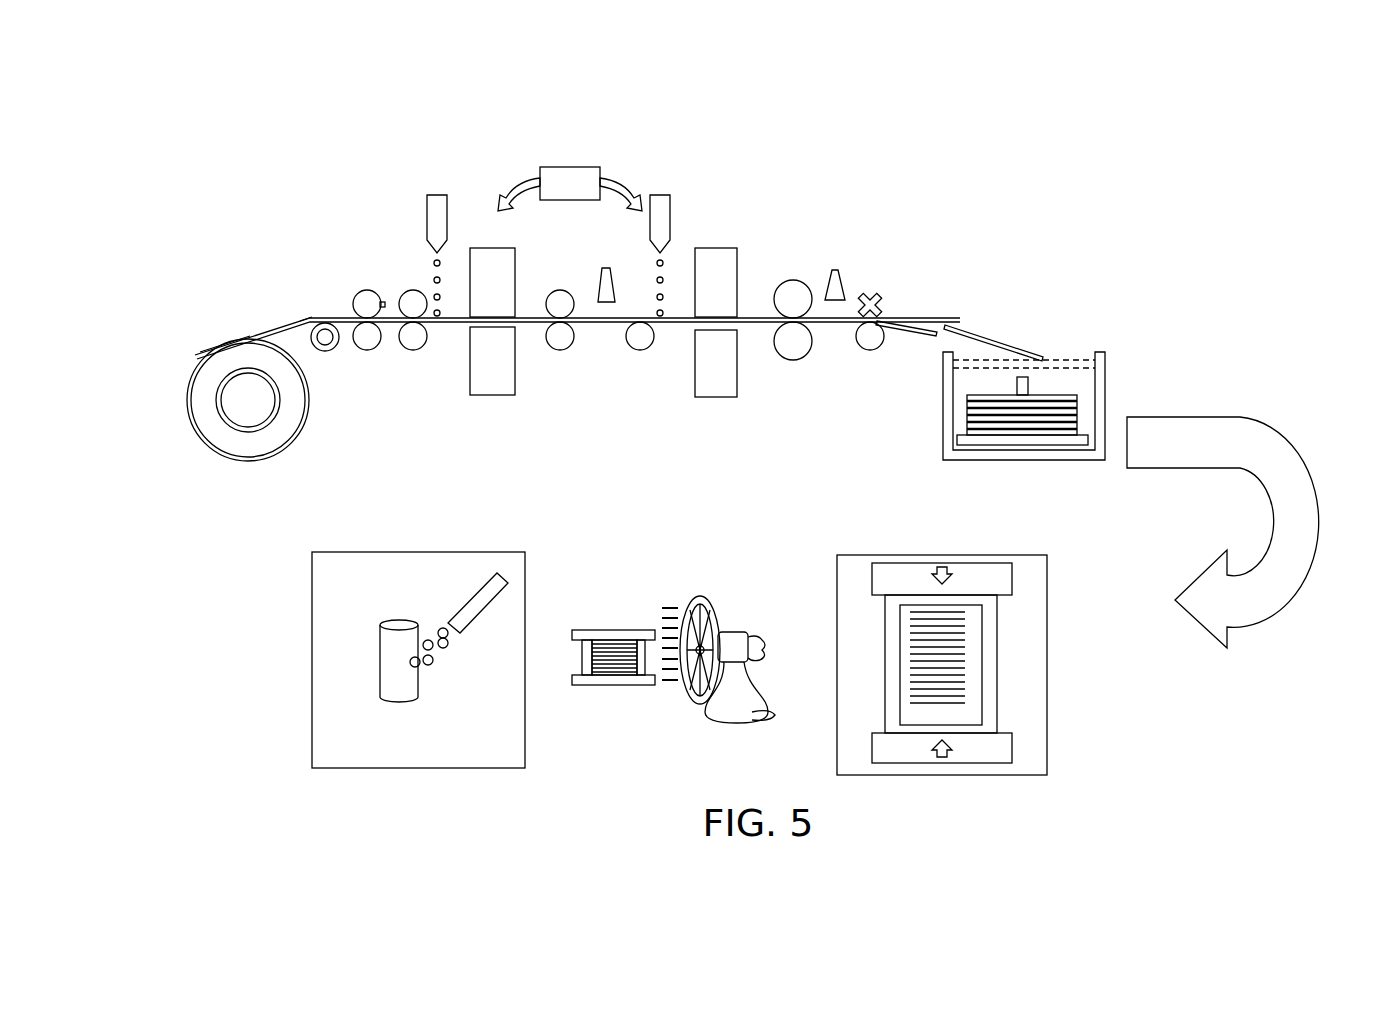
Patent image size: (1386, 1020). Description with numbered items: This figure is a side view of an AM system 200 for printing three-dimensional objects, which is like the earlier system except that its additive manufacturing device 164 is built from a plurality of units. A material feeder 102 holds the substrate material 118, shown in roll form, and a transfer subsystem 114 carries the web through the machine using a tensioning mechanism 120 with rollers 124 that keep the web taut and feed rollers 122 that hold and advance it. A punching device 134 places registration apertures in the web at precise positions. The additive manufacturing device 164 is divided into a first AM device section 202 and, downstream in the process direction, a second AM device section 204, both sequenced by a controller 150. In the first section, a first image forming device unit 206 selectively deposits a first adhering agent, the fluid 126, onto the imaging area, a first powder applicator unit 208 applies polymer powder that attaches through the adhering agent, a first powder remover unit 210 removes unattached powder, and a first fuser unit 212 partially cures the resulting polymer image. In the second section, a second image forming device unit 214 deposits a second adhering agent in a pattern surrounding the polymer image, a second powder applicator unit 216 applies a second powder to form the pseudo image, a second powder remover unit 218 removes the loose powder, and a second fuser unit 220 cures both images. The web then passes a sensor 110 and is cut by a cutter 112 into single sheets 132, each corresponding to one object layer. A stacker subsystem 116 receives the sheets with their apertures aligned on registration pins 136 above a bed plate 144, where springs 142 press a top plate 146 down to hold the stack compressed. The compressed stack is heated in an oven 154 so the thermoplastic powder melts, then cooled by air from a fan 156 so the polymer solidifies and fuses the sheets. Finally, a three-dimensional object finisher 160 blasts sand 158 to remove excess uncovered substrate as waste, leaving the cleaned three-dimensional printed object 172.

The material feeder 102 is at (249, 462).
The sensor 110 is at (606, 268).
The cutter 112 is at (878, 292).
The transfer subsystem 114 is at (333, 300).
The stacker subsystem 116 is at (1007, 402).
The substrate material 118 is at (290, 323).
The tensioning mechanism 120 is at (303, 300).
The feed rollers 122 is at (411, 290).
The rollers 124 is at (328, 352).
The fluid 126 is at (444, 280).
The single sheets 132 is at (990, 345).
The punching device 134 is at (364, 290).
The registration pins 136 is at (1017, 386).
The springs 142 is at (1030, 358).
The bed plate 144 is at (960, 440).
The top plate 146 is at (1066, 366).
The controller 150 is at (570, 166).
The oven 154 is at (995, 688).
The fan 156 is at (730, 625).
The sand 158 is at (430, 640).
The 3D object finisher 160 is at (500, 570).
The additive manufacturing device 164 is at (628, 212).
The cleaned 3D printed object 172 is at (400, 624).
The AM system 200 is at (298, 160).
The first AM device section 202 is at (405, 205).
The second AM device section 204 is at (840, 175).
The first image forming device unit 206 is at (439, 193).
The first powder applicator unit 208 is at (497, 247).
The first powder remover unit 210 is at (494, 396).
The first fuser unit 212 is at (556, 290).
The second image forming device unit 214 is at (662, 193).
The second powder applicator unit 216 is at (727, 247).
The second powder remover unit 218 is at (715, 398).
The second fuser unit 220 is at (795, 282).